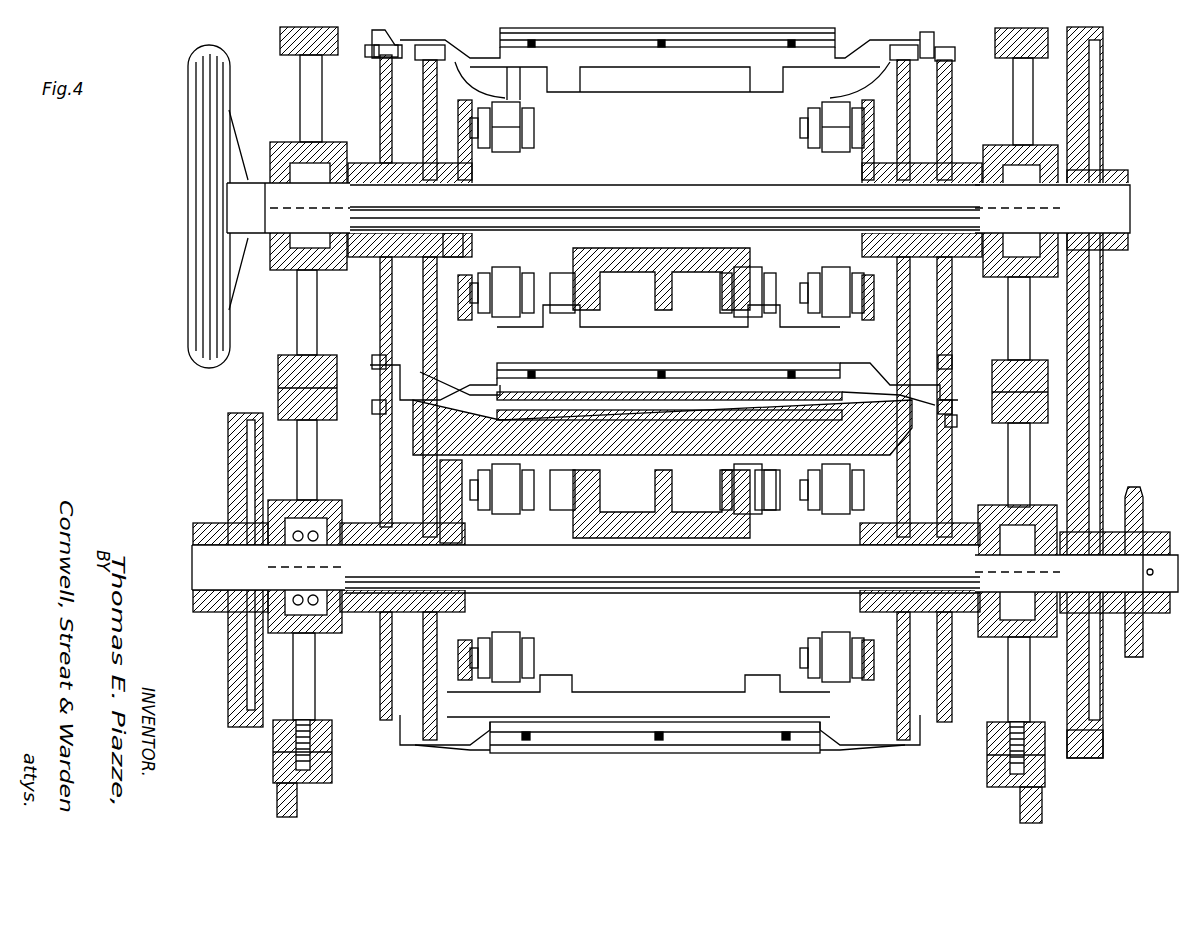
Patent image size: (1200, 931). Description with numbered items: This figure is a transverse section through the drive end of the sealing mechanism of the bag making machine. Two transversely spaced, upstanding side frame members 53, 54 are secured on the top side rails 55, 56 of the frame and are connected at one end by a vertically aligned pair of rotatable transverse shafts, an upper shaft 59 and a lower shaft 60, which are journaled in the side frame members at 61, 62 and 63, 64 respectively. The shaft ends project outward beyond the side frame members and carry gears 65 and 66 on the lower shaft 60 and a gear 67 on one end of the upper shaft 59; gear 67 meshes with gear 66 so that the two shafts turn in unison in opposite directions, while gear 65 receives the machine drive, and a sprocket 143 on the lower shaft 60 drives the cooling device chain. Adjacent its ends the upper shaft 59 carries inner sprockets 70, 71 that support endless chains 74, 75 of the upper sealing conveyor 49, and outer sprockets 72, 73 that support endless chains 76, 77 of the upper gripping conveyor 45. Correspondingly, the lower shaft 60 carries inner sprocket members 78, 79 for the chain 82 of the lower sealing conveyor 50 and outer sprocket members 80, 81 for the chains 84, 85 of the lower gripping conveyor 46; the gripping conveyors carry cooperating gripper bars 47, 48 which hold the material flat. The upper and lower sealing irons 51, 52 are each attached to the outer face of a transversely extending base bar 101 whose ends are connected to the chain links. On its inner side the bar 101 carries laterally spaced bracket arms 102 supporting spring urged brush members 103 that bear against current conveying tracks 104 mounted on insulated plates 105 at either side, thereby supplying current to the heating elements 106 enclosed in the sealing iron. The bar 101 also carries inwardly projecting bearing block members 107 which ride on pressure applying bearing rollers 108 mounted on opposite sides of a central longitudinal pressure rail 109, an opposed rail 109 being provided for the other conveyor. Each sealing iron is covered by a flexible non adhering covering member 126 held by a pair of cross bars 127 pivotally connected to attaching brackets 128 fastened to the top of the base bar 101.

The upper endless gripping conveyor 45 is at (935, 36).
The lower endless gripping conveyor 46 is at (917, 748).
The gripper bar 47 is at (948, 372).
The gripper bar 48 is at (935, 383).
The upper endless sealing conveyor 49 is at (462, 62).
The lower endless sealing conveyor 50 is at (430, 748).
The upper sealing iron 51 is at (705, 50).
The lower sealing iron 52 is at (665, 755).
The side frame member 53 is at (308, 675).
The side frame member 54 is at (1010, 672).
The top side rail 55 is at (334, 776).
The top side rail 56 is at (987, 788).
The upper transverse shaft 59 is at (702, 196).
The lower transverse shaft 60 is at (690, 593).
The journal 61 is at (272, 148).
The journal 62 is at (1025, 175).
The journal 63 is at (285, 558).
The journal 64 is at (1020, 570).
The gear 65 is at (235, 440).
The gear 66 is at (1098, 447).
The gear 67 is at (1090, 292).
The inner sprocket 70 is at (430, 62).
The inner sprocket 71 is at (920, 85).
The outer sprocket 72 is at (380, 82).
The outer sprocket 73 is at (952, 97).
The endless chain 74 is at (395, 42).
The endless chain 75 is at (880, 65).
The endless chain 76 is at (365, 50).
The endless chain 77 is at (955, 72).
The inner sprocket member 78 is at (423, 483).
The inner sprocket member 79 is at (900, 420).
The outer sprocket member 80 is at (380, 472).
The outer sprocket member 81 is at (952, 453).
The chain 82 is at (410, 420).
The endless chain 84 is at (372, 402).
The endless chain 85 is at (950, 412).
The base bar member 101 is at (635, 90).
The bracket arm 102 is at (505, 275).
The brush member 103 is at (478, 138).
The current conveying track 104 is at (862, 140).
The insulated plate 105 is at (475, 172).
The heating element 106 is at (715, 440).
The bearing block member 107 is at (640, 318).
The pressure applying bearing roller 108 is at (560, 275).
The central supporting pressure rail 109 is at (640, 550).
The covering member 126 is at (745, 755).
The cross bar 127 is at (592, 375).
The attaching bracket 128 is at (470, 372).
The sprocket 143 is at (1143, 640).